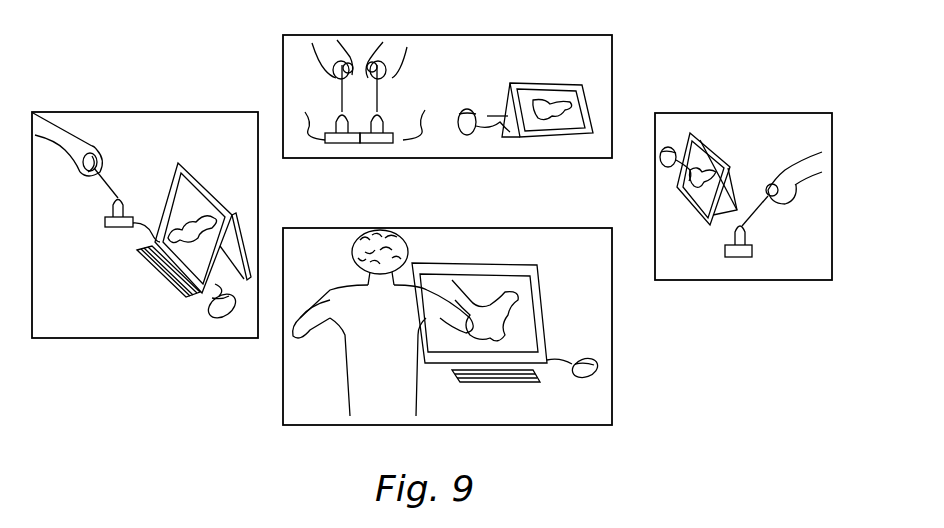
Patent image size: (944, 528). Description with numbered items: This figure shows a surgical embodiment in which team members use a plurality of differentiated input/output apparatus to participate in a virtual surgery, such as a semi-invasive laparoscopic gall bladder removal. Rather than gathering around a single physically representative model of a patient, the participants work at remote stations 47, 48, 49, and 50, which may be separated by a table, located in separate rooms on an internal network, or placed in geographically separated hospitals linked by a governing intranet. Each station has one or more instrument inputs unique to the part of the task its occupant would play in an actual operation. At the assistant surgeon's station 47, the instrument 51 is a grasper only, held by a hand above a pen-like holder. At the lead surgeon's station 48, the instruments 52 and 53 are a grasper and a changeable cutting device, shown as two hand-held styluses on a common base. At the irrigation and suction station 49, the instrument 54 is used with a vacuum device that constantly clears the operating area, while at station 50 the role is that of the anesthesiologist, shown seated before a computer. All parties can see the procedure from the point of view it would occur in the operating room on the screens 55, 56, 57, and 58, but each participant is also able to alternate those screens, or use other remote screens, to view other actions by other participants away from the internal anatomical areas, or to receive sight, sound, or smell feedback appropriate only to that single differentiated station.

The remote station 47 is at (258, 203).
The remote station 48 is at (421, 158).
The remote station 49 is at (655, 193).
The remote station 50 is at (497, 228).
The instrument 51 is at (96, 155).
The instrument 52 is at (337, 112).
The instrument 53 is at (382, 112).
The instrument 54 is at (745, 230).
The screen 55 is at (178, 195).
The screen 56 is at (518, 104).
The screen 57 is at (505, 278).
The screen 58 is at (698, 158).